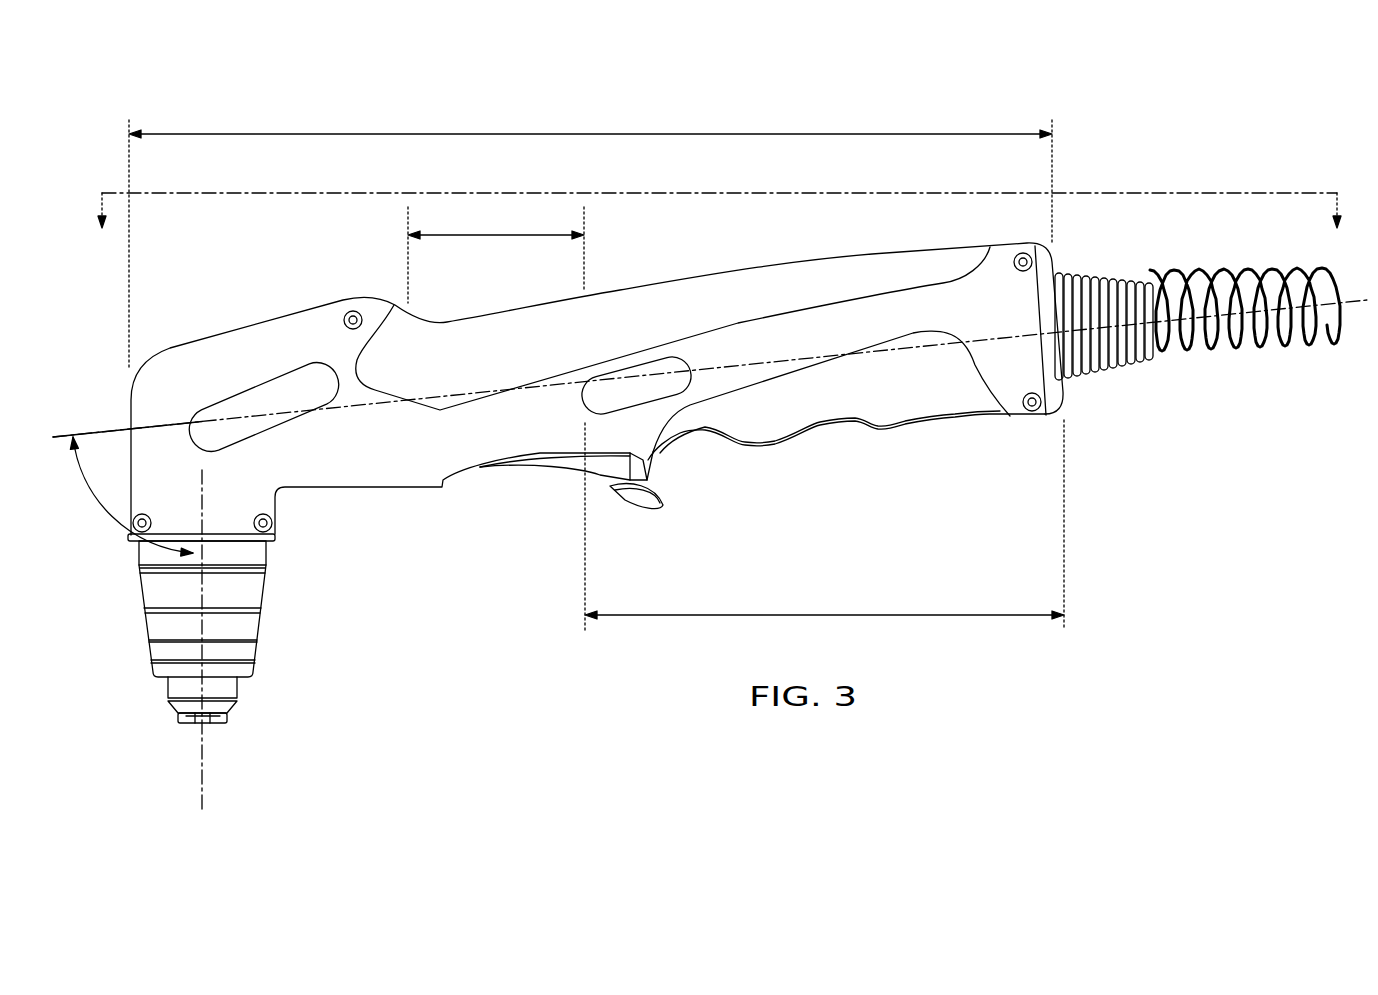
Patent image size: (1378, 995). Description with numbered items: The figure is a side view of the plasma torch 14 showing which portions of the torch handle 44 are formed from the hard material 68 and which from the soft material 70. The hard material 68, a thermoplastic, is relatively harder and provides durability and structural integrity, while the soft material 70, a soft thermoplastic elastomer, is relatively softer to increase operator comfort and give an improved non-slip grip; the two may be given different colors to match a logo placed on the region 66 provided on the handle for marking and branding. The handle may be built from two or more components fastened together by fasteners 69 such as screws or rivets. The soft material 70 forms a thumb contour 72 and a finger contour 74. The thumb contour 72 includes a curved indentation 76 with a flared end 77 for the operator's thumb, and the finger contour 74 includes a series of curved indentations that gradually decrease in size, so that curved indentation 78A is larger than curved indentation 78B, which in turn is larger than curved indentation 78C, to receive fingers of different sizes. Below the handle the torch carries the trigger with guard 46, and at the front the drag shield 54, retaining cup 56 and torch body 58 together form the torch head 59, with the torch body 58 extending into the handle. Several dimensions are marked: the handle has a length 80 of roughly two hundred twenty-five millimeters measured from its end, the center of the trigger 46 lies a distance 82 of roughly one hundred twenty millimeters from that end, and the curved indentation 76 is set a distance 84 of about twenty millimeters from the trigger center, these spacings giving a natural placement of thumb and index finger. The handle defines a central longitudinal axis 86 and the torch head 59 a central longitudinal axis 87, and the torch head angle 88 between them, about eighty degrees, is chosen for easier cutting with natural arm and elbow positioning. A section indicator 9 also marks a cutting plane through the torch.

The section line 9- 9 is at (720, 228).
The torch 14 is at (1186, 164).
The torch handle 44 is at (613, 287).
The trigger with guard 46 is at (660, 510).
The drag shield 54 is at (236, 706).
The retaining cup 56 is at (254, 655).
The torch body 58 is at (268, 588).
The torch head 59 is at (262, 621).
The region 66 is at (288, 418).
The hard material 68 is at (287, 335).
The fasteners 69 is at (353, 310).
The soft material 70 is at (781, 262).
The thumb contour 72 is at (450, 306).
The finger contour 74 is at (845, 441).
The curved indentation 76 is at (420, 318).
The flared end 77 is at (378, 297).
The curved indentation 78A is at (741, 443).
The curved indentation 78B is at (874, 433).
The curved indentation 78C is at (980, 422).
The length 80 is at (593, 132).
The distance 82 is at (816, 619).
The distance 84 is at (507, 233).
The central longitudinal axis 86 is at (118, 430).
The central longitudinal axis 87 is at (208, 775).
The torch head angle 88 is at (112, 522).